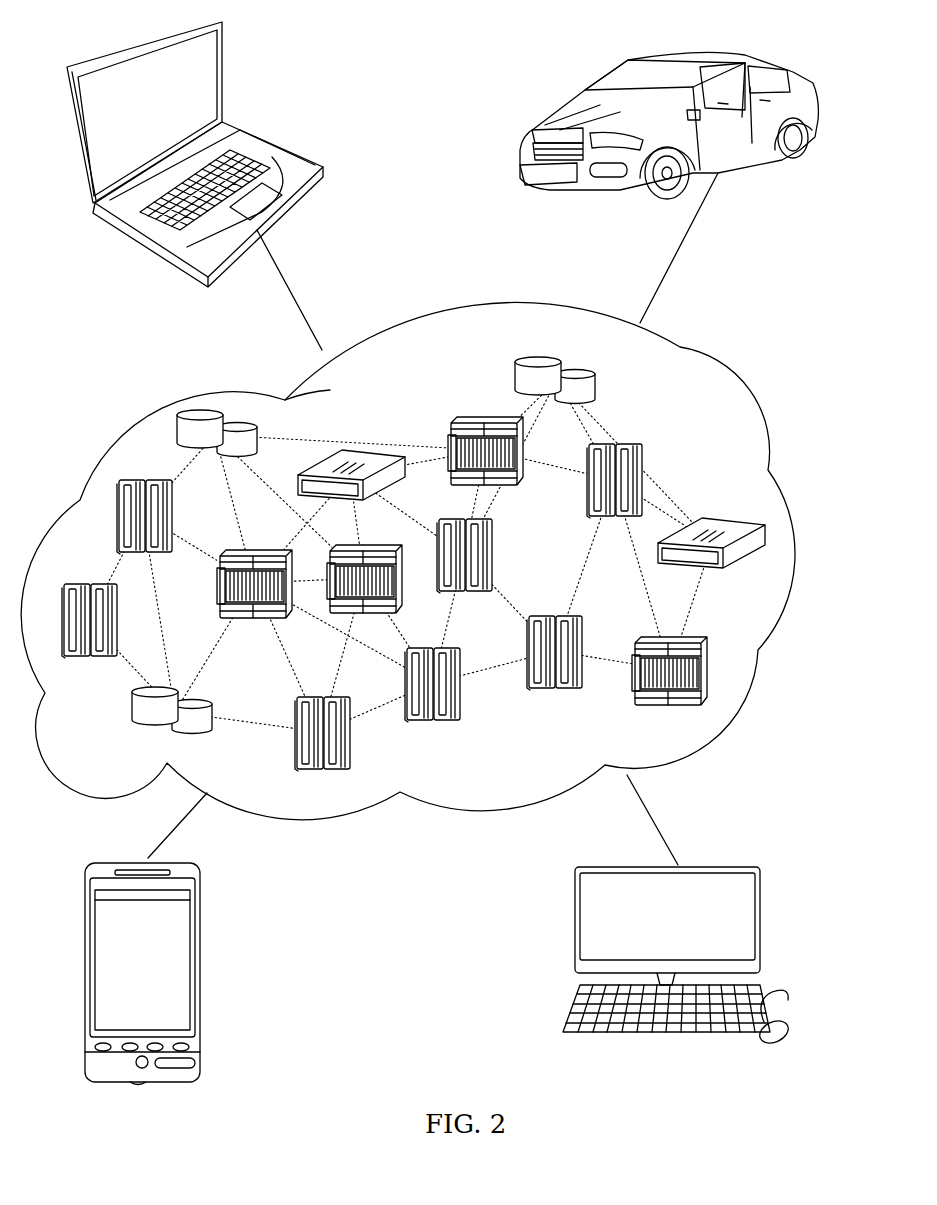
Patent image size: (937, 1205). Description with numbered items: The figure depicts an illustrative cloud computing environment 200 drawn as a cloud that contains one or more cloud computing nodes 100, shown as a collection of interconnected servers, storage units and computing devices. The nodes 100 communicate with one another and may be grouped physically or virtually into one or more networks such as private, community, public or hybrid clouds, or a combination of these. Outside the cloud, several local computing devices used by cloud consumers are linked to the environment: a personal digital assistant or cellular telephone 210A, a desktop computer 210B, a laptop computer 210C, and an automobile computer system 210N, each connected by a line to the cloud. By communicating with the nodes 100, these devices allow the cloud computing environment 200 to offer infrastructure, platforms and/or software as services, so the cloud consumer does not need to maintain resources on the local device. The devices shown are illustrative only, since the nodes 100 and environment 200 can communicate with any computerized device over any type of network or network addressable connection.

The cloud computing node 100 is at (737, 505).
The cloud computing environment 200 is at (411, 560).
The personal digital assistant or cellular telephone 210A is at (200, 887).
The desktop computer 210B is at (798, 866).
The laptop computer 210C is at (273, 148).
The automobile computer system 210N is at (770, 70).